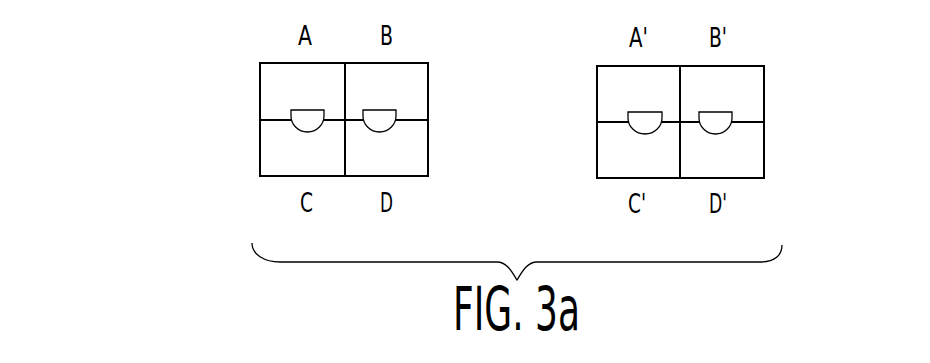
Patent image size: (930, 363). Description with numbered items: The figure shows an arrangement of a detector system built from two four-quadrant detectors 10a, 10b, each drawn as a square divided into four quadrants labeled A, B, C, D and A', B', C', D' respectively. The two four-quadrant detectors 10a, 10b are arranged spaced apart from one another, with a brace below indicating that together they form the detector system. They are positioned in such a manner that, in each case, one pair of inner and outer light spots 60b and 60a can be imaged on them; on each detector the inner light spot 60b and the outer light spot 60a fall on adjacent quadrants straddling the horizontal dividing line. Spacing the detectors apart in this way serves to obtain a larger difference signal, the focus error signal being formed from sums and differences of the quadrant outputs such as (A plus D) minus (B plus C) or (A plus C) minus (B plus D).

The four-quadrant detector 10a is at (260, 89).
The four-quadrant detector 10b is at (765, 88).
The outer light spot 60a is at (305, 132).
The inner light spot 60b is at (380, 133).